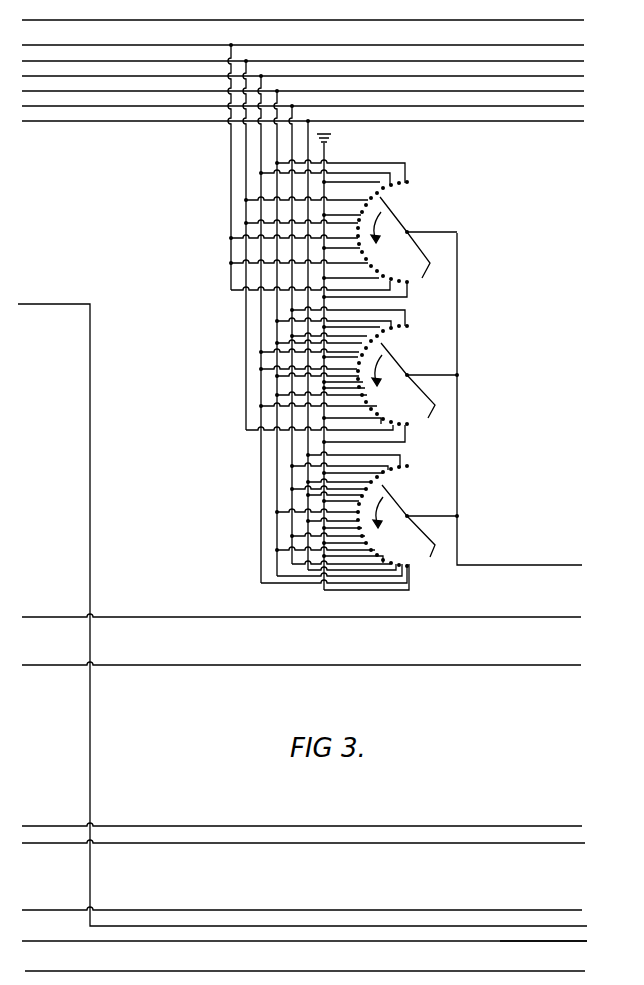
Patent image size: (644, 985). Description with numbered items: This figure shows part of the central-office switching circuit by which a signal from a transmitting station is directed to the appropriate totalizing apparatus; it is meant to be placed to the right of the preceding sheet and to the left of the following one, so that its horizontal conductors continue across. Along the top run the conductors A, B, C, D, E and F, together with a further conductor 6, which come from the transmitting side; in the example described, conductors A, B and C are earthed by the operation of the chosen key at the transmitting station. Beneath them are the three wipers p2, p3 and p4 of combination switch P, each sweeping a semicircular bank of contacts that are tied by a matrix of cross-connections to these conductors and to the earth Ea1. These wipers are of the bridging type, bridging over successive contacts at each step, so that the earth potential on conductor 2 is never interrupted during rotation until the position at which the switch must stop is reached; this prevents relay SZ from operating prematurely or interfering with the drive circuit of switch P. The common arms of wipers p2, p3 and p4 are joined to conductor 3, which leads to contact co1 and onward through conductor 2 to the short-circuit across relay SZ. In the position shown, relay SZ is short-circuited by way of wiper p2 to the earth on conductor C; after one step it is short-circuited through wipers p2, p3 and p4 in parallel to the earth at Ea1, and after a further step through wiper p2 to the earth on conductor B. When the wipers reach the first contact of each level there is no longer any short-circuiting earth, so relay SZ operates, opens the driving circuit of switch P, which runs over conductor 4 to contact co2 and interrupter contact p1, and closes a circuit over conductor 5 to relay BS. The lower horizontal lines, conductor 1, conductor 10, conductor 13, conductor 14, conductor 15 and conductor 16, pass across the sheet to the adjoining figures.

The conductor 1 is at (303, 608).
The conductor 2 is at (300, 608).
The conductor 3 is at (519, 399).
The conductor 4 is at (300, 657).
The conductor 5 is at (302, 818).
The conductor 6 is at (303, 13).
The conductor 10 is at (303, 903).
The conductor 13 is at (305, 965).
The conductor 14 is at (303, 836).
The conductor 15 is at (304, 935).
The conductor 16 is at (543, 951).
The conductor A is at (303, 38).
The conductor B is at (303, 54).
The conductor C is at (303, 69).
The supply line D is at (303, 84).
The supply line E is at (303, 99).
The supply line F is at (303, 114).
The earth Ea1 is at (346, 360).
The wiper p2 is at (344, 228).
The wiper p3 is at (351, 374).
The wiper p4 is at (359, 521).